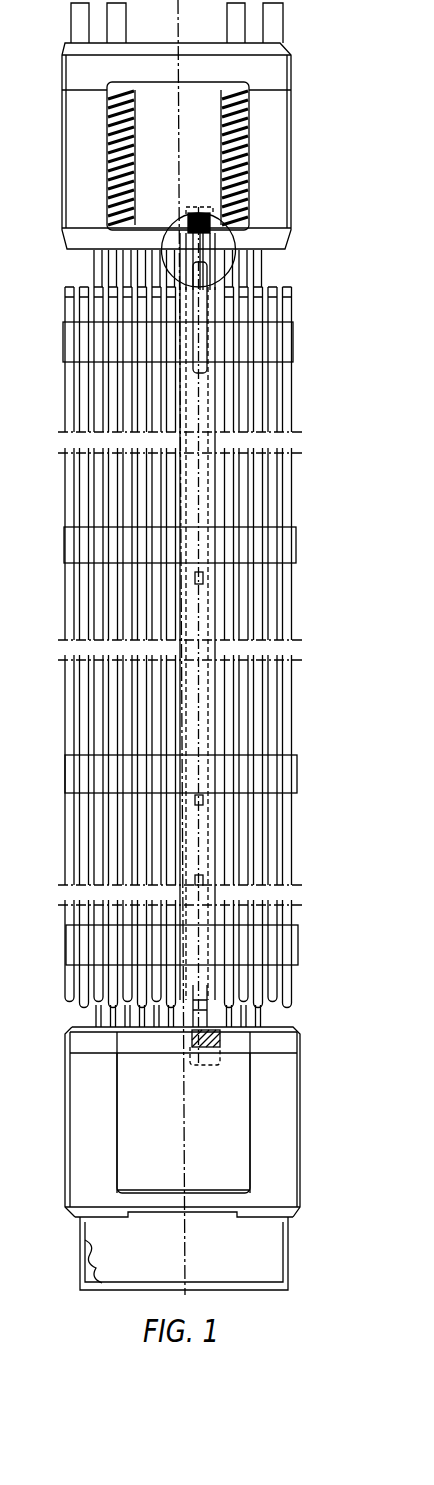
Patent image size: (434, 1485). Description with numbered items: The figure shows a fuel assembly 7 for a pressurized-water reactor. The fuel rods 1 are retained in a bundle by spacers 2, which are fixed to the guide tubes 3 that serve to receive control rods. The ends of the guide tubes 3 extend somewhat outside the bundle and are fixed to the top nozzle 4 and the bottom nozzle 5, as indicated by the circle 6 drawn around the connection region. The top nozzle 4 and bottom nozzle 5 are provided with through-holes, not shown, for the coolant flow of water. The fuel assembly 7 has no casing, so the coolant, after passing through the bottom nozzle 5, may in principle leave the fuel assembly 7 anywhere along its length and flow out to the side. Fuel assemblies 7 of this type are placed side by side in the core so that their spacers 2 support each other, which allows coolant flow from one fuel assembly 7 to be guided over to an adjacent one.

The fuel rods 1 is at (72, 490).
The spacers 2 is at (75, 337).
The guide tubes 3 is at (96, 273).
The top nozzle 4 is at (278, 238).
The bottom nozzle 5 is at (300, 1089).
The circle 6 is at (237, 253).
The fuel assembly 7 is at (302, 597).